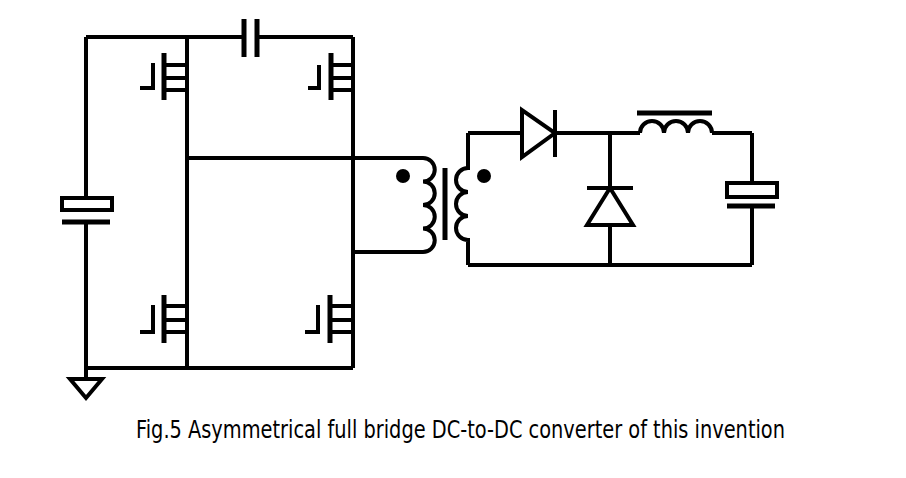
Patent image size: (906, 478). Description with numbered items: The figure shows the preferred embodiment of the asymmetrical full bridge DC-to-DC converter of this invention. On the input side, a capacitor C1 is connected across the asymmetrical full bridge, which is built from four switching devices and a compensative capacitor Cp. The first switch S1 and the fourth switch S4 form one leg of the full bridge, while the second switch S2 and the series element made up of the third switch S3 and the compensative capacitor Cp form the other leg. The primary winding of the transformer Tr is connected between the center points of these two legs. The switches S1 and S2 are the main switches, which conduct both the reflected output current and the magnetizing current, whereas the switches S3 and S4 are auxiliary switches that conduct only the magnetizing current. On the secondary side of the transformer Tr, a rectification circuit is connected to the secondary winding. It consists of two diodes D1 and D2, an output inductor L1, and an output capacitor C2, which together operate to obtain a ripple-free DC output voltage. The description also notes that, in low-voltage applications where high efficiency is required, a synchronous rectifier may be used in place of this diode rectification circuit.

The input capacitor C1 is at (70, 233).
The compensative capacitor Cp is at (249, 58).
The first switching device S1 is at (159, 101).
The second switching device S2 is at (315, 301).
The third switching device S3 is at (323, 100).
The fourth switching device S4 is at (159, 300).
The transformer Tr is at (443, 186).
The diode D1 is at (531, 113).
The diode D2 is at (582, 210).
The output inductor L1 is at (674, 104).
The output capacitor C2 is at (772, 221).